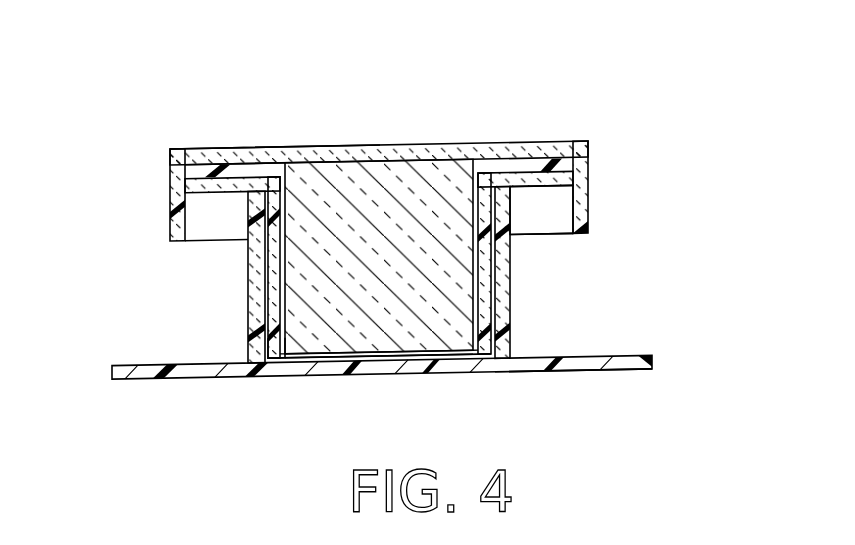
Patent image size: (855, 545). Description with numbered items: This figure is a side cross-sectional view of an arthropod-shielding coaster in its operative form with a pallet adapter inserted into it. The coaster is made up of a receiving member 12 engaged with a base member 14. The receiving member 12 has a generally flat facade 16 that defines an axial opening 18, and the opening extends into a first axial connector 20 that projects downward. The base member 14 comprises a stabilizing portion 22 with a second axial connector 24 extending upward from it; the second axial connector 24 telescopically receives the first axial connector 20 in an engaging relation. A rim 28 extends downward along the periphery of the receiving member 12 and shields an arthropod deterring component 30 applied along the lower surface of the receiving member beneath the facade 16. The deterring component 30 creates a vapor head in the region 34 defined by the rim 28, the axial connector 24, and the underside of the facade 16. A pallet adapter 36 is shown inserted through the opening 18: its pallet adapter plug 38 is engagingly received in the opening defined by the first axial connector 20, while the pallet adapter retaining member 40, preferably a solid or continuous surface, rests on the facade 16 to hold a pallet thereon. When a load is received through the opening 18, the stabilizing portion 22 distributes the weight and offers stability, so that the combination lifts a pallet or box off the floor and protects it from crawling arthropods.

The receiving member 12 is at (642, 245).
The base member 14 is at (572, 392).
The facade 16 is at (188, 172).
The axial opening 18 is at (457, 157).
The first axial connector 20 is at (277, 350).
The stabilizing portion 22 is at (598, 357).
The second axial connector 24 is at (513, 296).
The rim 28 is at (590, 206).
The arthropod deterring component 30 is at (573, 183).
The region 34 is at (560, 225).
The pallet adapter 36 is at (573, 145).
The pallet adapter plug 38 is at (368, 325).
The pallet adapter retaining member 40 is at (243, 150).